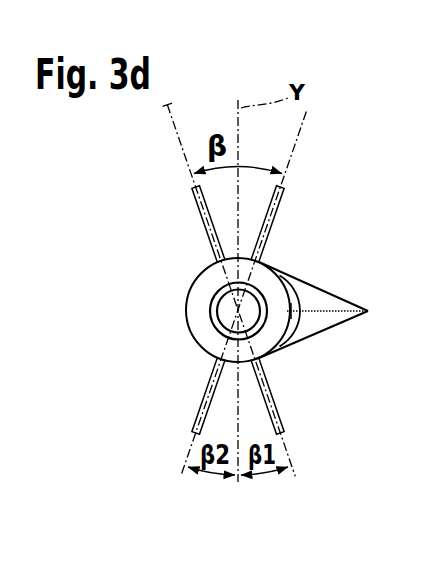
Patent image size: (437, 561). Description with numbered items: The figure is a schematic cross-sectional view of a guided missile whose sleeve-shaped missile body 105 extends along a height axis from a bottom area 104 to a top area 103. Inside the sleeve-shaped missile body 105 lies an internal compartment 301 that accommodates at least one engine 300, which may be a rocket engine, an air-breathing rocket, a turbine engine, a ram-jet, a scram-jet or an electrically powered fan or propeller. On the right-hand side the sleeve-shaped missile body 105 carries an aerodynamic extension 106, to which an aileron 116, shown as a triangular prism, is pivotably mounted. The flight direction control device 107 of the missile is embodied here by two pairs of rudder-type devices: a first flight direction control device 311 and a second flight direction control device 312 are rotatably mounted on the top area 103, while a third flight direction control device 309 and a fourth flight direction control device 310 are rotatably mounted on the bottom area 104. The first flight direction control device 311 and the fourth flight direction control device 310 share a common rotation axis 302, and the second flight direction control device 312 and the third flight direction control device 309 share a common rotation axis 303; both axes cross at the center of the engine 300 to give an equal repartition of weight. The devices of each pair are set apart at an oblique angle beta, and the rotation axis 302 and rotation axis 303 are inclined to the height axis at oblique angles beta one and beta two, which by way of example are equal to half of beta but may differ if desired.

The engine 300 is at (252, 311).
The internal compartment 301 is at (213, 291).
The rotation axis 302 is at (164, 108).
The rotation axis 303 is at (306, 122).
The third flight direction control device 309 is at (198, 420).
The fourth flight direction control device 310 is at (279, 408).
The first flight direction control device 311 is at (204, 221).
The second flight direction control device 312 is at (278, 209).
The top area 103 is at (267, 257).
The bottom area 104 is at (213, 362).
The sleeve-shaped missile body 105 is at (185, 319).
The aerodynamic extension 106 is at (281, 286).
The flight direction control device 107 is at (193, 186).
The aileron 116 is at (333, 316).